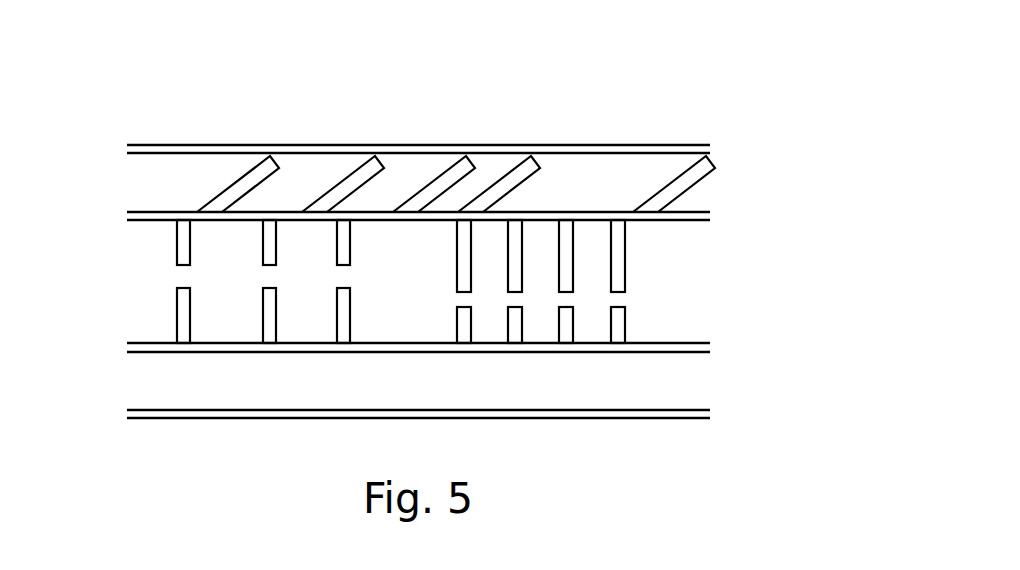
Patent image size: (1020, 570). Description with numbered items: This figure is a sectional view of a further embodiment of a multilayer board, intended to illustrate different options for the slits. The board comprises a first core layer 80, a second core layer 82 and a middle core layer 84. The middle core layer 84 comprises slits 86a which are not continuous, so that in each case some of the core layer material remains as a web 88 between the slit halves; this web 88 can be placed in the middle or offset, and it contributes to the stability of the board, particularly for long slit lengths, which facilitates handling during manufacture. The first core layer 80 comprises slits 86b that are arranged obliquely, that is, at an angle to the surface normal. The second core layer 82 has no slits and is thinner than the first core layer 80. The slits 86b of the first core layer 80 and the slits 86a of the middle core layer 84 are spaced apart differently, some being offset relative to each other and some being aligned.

The first core layer 80 is at (703, 183).
The second core layer 82 is at (690, 372).
The middle core layer 84 is at (680, 273).
The slits 86a is at (185, 235).
The slits 86b is at (264, 168).
The web 88 is at (178, 273).